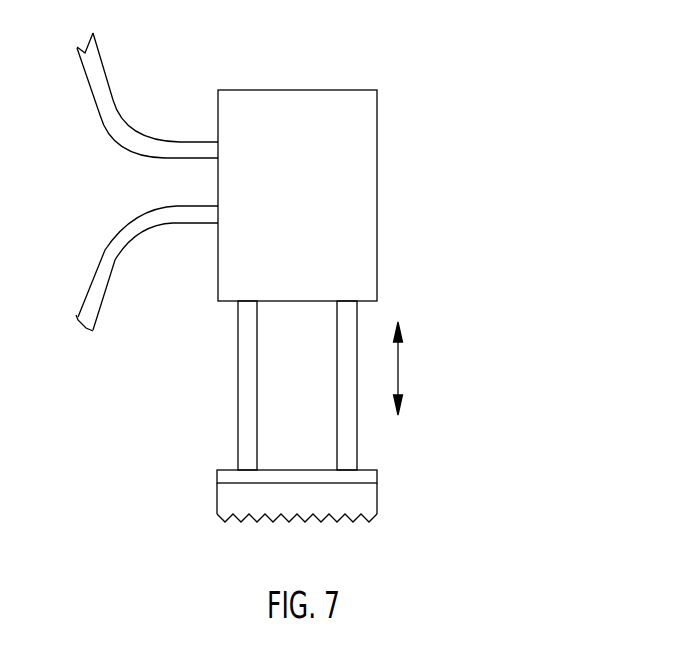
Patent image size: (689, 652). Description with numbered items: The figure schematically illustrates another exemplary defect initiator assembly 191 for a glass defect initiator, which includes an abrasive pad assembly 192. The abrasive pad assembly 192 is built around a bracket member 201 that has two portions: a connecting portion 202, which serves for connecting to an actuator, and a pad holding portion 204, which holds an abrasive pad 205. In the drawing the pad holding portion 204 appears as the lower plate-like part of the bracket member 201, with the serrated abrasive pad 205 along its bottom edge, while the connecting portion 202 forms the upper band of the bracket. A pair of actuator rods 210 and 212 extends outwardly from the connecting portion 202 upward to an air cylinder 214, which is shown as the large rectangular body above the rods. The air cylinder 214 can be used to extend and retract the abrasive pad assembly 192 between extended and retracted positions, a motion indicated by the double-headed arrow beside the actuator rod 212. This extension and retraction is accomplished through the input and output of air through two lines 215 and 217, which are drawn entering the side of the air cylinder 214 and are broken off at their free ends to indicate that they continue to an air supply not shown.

The defect initiator assembly 191 is at (470, 116).
The abrasive pad assembly 192 is at (412, 475).
The bracket member 201 is at (285, 477).
The connecting portion 202 is at (313, 470).
The pad holding portion 204 is at (298, 485).
The abrasive pad 205 is at (348, 502).
The actuator rod 210 is at (250, 363).
The actuator rod 212 is at (347, 338).
The air cylinder 214 is at (288, 123).
The line 215 is at (115, 110).
The line 217 is at (127, 235).